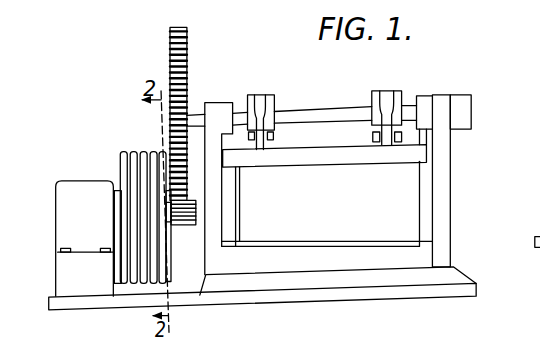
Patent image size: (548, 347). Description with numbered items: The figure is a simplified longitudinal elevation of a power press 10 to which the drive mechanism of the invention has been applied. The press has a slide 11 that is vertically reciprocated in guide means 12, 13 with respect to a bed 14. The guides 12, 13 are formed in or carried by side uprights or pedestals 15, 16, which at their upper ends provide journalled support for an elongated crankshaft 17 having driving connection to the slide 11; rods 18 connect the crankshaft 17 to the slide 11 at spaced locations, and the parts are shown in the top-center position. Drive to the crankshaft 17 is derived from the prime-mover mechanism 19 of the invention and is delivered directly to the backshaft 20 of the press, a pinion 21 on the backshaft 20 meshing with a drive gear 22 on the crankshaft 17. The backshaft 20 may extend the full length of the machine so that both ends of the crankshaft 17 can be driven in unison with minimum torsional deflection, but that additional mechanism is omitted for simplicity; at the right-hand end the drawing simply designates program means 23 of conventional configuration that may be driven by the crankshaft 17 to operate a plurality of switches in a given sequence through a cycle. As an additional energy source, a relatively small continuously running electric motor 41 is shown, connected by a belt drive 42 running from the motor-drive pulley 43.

The power press 10 is at (452, 160).
The slide 11 is at (343, 163).
The guide means 12 is at (234, 190).
The guide means 13 is at (418, 184).
The bed 14 is at (337, 242).
The side upright 15 is at (208, 238).
The side upright 16 is at (450, 202).
The crankshaft 17 is at (300, 106).
The rods 18 is at (259, 92).
The prime-mover mechanism 19 is at (126, 195).
The backshaft 20 is at (199, 282).
The pinion 21 is at (172, 226).
The drive gear 22 is at (186, 47).
The program means 23 is at (457, 93).
The electric motor 41 is at (66, 184).
The belt drive 42 is at (150, 149).
The motor-drive pulley 43 is at (114, 242).